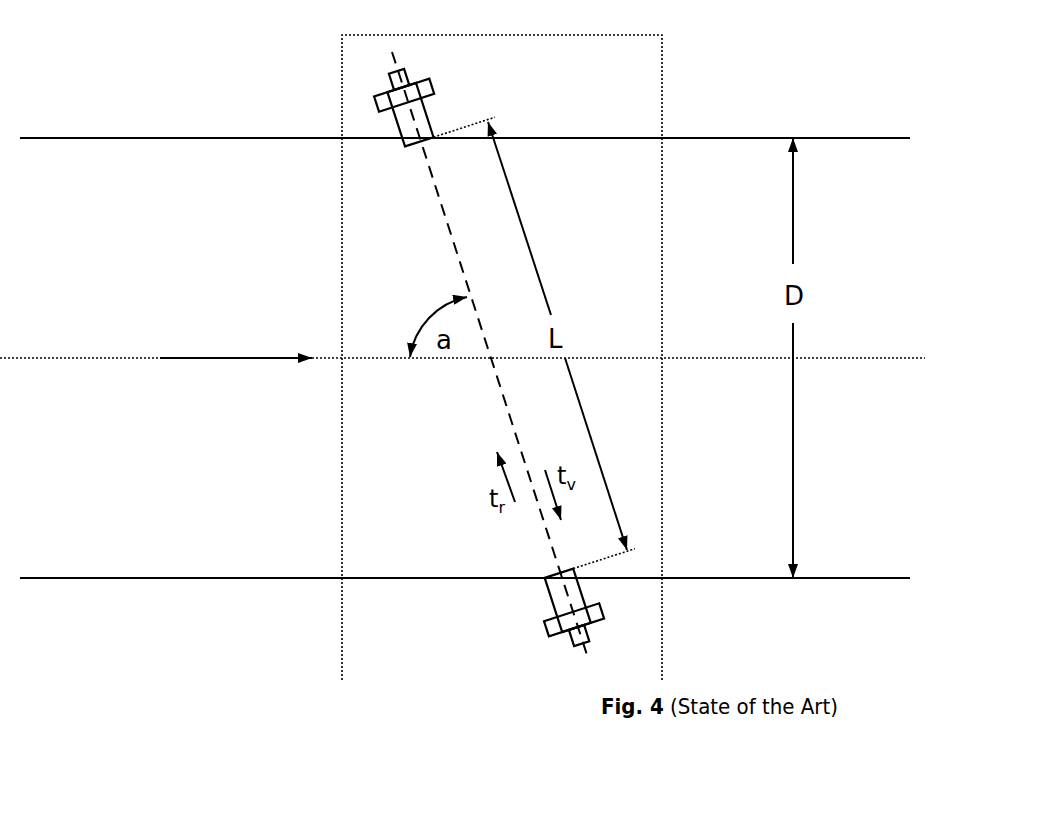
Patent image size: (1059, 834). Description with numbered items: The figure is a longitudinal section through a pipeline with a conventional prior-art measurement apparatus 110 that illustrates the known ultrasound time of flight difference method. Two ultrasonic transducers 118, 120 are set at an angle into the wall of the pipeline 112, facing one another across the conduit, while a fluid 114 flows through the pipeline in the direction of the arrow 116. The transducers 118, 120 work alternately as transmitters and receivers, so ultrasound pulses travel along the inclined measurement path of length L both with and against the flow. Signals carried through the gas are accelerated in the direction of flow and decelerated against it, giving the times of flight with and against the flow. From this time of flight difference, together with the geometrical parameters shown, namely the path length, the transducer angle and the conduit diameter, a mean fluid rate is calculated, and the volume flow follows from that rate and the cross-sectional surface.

The measurement apparatus 110 is at (684, 99).
The pipeline 112 is at (192, 140).
The fluid 114 is at (210, 512).
The arrow 116 is at (210, 360).
The ultrasonic transducer 118 is at (390, 128).
The ultrasonic transducer 120 is at (553, 592).